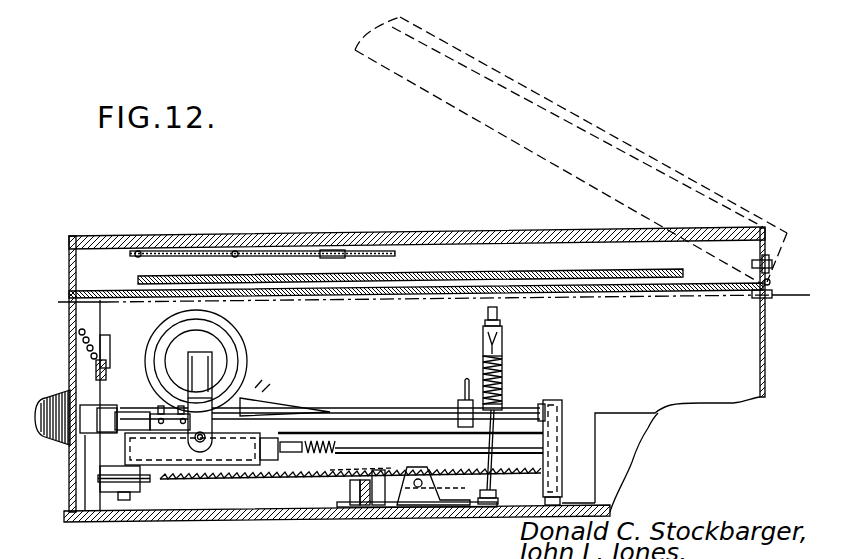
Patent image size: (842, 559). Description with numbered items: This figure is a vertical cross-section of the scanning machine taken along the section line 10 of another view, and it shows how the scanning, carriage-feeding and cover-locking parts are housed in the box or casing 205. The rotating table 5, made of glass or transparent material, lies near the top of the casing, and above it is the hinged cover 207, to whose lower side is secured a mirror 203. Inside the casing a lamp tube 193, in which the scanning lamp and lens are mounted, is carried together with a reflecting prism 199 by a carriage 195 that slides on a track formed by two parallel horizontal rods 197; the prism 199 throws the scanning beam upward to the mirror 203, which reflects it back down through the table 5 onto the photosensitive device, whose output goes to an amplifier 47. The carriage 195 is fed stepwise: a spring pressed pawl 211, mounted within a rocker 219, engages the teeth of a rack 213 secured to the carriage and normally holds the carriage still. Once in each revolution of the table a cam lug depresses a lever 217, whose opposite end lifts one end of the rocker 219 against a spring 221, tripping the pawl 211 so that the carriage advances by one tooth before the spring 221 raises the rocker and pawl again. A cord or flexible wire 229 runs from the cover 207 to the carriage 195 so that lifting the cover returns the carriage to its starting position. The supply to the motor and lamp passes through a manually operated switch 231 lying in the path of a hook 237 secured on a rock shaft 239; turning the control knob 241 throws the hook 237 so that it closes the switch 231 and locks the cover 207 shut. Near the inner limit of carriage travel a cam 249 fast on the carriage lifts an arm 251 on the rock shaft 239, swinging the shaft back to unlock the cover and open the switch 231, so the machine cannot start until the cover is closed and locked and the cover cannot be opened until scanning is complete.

The table 5 is at (510, 271).
The section line 10 is at (48, 326).
The amplifier 47 is at (612, 418).
The lamp tube 193 is at (234, 334).
The carriage 195 is at (248, 401).
The parallel horizontal rods 197 is at (378, 447).
The reflecting prism 199 is at (203, 352).
The mirror 203 is at (236, 250).
The box or casing 205 is at (767, 359).
The hinged cover 207 is at (522, 86).
The spring pressed pawl 211 is at (393, 485).
The rack 213 is at (293, 468).
The lever 217 is at (365, 505).
The rocker 219 is at (388, 480).
The spring 221 is at (494, 495).
The cord or flexible wire 229 is at (158, 482).
The manually operated switch 231 is at (108, 362).
The hook 237 is at (106, 376).
The rock shaft 239 is at (118, 418).
The control knob 241 is at (56, 390).
The cam 249 is at (284, 408).
The arm 251 is at (463, 393).